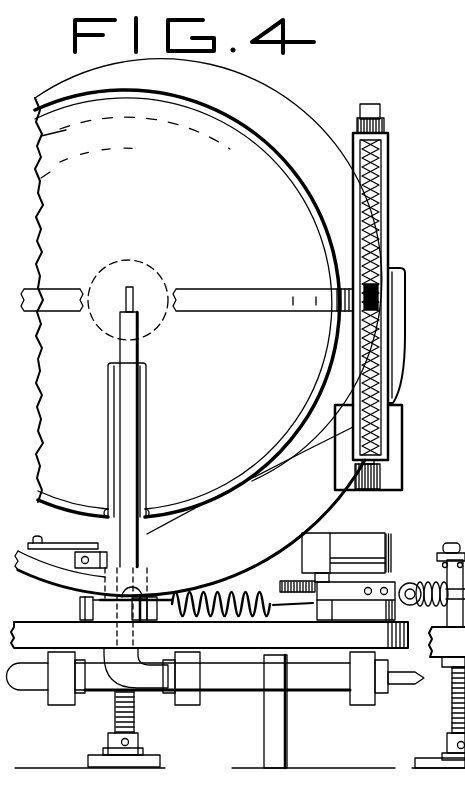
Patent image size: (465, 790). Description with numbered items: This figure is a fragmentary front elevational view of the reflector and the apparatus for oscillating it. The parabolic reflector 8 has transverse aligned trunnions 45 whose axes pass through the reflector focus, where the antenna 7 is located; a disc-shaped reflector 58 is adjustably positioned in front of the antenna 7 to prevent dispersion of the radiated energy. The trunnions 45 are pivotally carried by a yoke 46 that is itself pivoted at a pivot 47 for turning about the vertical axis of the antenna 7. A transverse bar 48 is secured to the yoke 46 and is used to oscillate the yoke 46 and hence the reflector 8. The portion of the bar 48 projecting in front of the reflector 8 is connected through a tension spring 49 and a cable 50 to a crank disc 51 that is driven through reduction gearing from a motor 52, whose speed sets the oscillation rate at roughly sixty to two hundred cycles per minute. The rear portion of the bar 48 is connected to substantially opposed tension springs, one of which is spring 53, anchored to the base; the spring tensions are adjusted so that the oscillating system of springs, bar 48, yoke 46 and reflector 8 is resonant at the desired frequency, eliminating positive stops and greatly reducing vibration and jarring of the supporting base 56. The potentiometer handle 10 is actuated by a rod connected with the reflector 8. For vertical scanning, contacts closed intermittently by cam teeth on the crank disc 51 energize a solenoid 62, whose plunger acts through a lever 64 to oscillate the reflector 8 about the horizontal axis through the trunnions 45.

The antenna 7 is at (133, 300).
The reflector 8 is at (239, 132).
The potentiometer handle 10 is at (80, 543).
The trunnions 45 is at (404, 303).
The yoke 46 is at (325, 505).
The pivot 47 is at (140, 571).
The transverse bar 48 is at (78, 608).
The tension spring 49 is at (230, 598).
The cable 50 is at (288, 606).
The crank disc 51 is at (291, 581).
The motor 52 is at (374, 537).
The tension spring 53 is at (430, 584).
The supporting base 56 is at (221, 650).
The disc-shaped reflector 58 is at (132, 262).
The solenoid 62 is at (402, 428).
The lever 64 is at (384, 288).